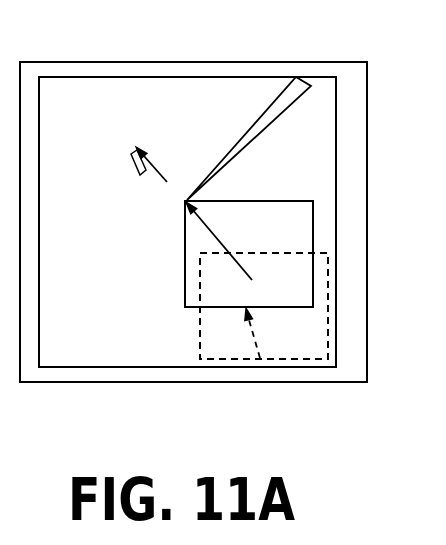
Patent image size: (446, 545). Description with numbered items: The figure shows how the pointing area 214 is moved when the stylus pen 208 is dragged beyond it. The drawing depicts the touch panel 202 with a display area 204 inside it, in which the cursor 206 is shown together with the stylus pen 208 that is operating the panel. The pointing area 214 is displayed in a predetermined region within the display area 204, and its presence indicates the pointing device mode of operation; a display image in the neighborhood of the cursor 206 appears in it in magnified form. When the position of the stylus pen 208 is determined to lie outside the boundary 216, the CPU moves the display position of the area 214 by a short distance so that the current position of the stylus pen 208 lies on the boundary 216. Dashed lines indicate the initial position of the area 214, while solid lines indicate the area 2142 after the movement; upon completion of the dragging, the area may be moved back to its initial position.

The touch panel 202 is at (63, 381).
The display area 204 is at (70, 93).
The cursor 206 is at (139, 177).
The stylus pen 208 is at (286, 103).
The pointing area 214 is at (285, 347).
The boundary 216 is at (185, 307).
The area after the movement 2142 is at (296, 232).